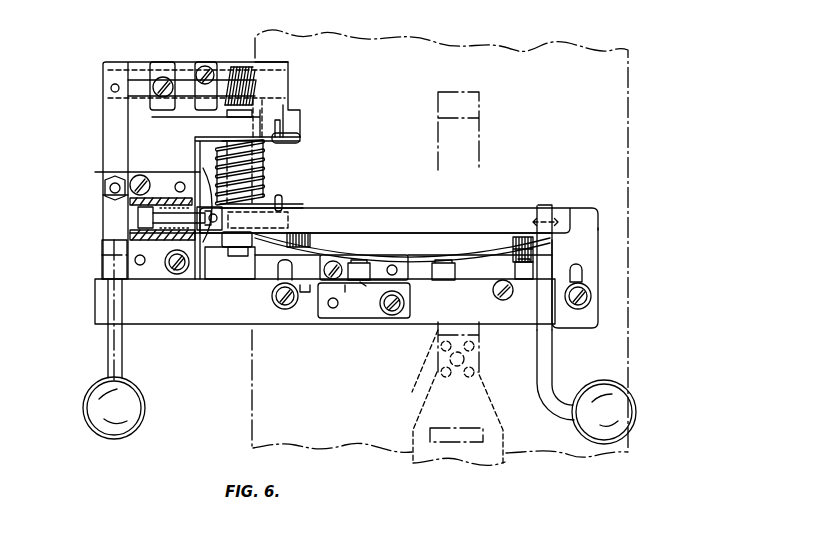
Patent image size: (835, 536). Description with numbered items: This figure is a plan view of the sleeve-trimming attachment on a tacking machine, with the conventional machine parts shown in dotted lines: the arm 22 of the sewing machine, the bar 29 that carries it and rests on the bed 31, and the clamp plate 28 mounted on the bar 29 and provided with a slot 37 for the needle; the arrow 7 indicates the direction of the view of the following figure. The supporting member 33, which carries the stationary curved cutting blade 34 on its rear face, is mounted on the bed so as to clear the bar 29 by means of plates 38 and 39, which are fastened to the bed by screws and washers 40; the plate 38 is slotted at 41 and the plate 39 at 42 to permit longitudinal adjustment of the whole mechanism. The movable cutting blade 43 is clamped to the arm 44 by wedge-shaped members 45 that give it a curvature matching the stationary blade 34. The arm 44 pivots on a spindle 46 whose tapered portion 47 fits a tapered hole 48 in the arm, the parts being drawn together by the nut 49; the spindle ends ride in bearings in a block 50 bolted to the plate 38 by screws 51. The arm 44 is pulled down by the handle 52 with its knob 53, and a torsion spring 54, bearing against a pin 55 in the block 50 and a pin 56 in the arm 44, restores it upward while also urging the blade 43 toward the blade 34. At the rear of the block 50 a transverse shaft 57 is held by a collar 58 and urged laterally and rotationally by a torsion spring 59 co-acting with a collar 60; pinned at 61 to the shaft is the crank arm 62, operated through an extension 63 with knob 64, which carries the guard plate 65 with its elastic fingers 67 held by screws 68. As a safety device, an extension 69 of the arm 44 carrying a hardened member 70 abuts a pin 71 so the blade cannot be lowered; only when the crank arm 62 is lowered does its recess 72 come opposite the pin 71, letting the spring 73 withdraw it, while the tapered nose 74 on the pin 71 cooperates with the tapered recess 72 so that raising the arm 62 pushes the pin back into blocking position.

The direction of view 7 is at (321, 372).
The arm 22 is at (480, 103).
The clamp plate 28 is at (505, 465).
The bar 29 is at (441, 396).
The bed 31 is at (628, 142).
The supporting member 33 is at (420, 326).
The stationary curved cutting blade 34 is at (560, 250).
The slot 37 is at (470, 440).
The plate 38 is at (370, 326).
The plate 39 is at (522, 326).
The screws and washers 40 is at (284, 310).
The slot 41 is at (282, 278).
The slot 42 is at (582, 272).
The movable cutting blade 43 is at (345, 248).
The arm 44 is at (394, 214).
The wedge-shaped members 45 is at (500, 242).
The spindle 46 is at (262, 125).
The tapered portion 47 is at (265, 200).
The tapered hole 48 is at (264, 216).
The nut 49 is at (225, 248).
The block 50 is at (290, 100).
The screws 51 is at (143, 175).
The handle 52 is at (545, 382).
The knob 53 is at (628, 406).
The torsion spring 54 is at (270, 180).
The pin 55 is at (300, 138).
The pin 56 is at (285, 206).
The transverse shaft 57 is at (180, 76).
The collar 58 is at (163, 61).
The torsion spring 59 is at (241, 66).
The collar 60 is at (203, 61).
The pin 61 is at (110, 88).
The crank arm 62 is at (112, 130).
The extension 63 is at (104, 348).
The knob 64 is at (100, 420).
The guard plate 65 is at (470, 282).
The elastic fingers 67 is at (422, 262).
The screws 68 is at (435, 285).
The extension 69 is at (200, 164).
The hardened member 70 is at (222, 254).
The pin 71 is at (186, 184).
The recess 72 is at (120, 213).
The spring 73 is at (160, 245).
The tapered nose 74 is at (128, 225).